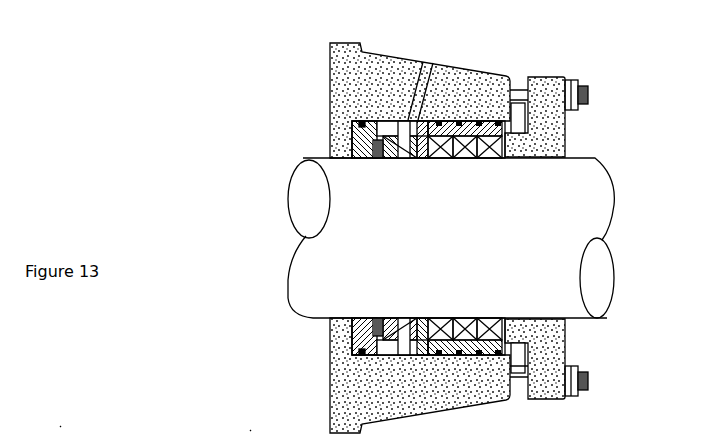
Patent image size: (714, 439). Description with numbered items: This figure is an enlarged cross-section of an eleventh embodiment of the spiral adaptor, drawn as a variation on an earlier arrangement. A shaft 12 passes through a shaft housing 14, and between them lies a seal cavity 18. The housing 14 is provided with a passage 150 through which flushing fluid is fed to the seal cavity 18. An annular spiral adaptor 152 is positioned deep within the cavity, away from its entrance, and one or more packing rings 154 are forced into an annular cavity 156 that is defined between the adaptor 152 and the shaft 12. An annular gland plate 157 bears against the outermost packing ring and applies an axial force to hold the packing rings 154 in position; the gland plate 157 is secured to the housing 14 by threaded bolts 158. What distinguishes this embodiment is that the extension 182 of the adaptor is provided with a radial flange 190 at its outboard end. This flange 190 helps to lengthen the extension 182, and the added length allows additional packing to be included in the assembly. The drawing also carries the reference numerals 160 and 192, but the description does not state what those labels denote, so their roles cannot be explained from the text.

The shaft 12 is at (552, 248).
The shaft housing 14 is at (358, 93).
The seal cavity 18 is at (372, 193).
The passage 150 is at (427, 81).
The annular spiral adaptor 152 is at (348, 333).
The packing rings 154 is at (487, 352).
The annular cavity 156 is at (473, 158).
The annular gland plate 157 is at (547, 348).
The threaded bolts 158 is at (583, 377).
The base 160 is at (68, 431).
The extension 182 is at (255, 433).
The radial flange 190 is at (517, 378).
The seal ring 192 is at (435, 352).